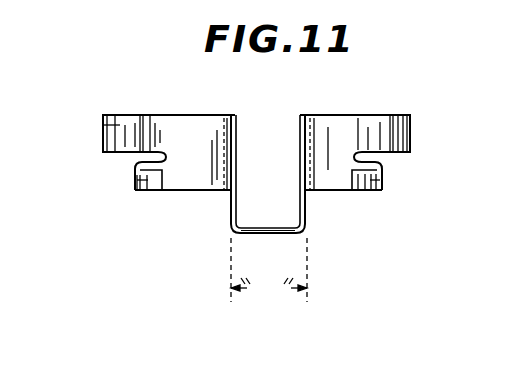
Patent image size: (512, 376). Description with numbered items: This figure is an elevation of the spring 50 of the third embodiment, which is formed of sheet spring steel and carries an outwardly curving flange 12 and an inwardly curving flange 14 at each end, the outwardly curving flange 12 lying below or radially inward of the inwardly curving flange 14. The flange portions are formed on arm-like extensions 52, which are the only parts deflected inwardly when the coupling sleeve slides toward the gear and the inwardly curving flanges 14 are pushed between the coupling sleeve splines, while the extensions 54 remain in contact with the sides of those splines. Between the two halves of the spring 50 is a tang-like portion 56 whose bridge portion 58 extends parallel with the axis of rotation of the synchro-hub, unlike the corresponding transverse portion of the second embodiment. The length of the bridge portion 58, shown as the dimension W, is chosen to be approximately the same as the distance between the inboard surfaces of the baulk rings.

The spring 50 is at (343, 223).
The inwardly curving flange 14 is at (118, 128).
The outwardly curving flange 12 is at (133, 182).
The arm-like extension 52 is at (187, 173).
The extension 54 is at (333, 135).
The tang-like portion 56 is at (233, 203).
The bridge portion 58 is at (266, 228).